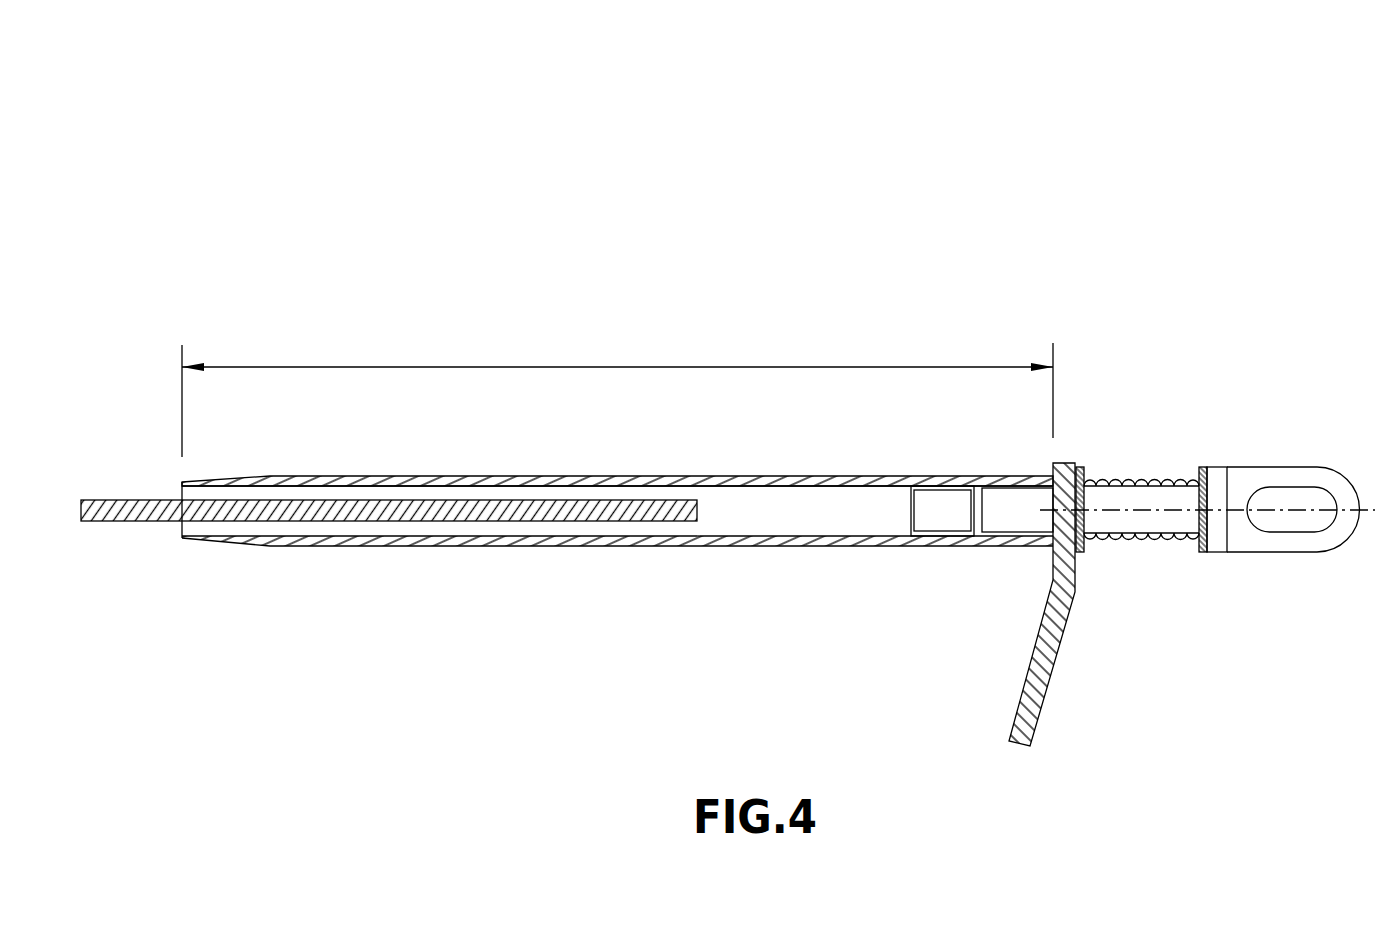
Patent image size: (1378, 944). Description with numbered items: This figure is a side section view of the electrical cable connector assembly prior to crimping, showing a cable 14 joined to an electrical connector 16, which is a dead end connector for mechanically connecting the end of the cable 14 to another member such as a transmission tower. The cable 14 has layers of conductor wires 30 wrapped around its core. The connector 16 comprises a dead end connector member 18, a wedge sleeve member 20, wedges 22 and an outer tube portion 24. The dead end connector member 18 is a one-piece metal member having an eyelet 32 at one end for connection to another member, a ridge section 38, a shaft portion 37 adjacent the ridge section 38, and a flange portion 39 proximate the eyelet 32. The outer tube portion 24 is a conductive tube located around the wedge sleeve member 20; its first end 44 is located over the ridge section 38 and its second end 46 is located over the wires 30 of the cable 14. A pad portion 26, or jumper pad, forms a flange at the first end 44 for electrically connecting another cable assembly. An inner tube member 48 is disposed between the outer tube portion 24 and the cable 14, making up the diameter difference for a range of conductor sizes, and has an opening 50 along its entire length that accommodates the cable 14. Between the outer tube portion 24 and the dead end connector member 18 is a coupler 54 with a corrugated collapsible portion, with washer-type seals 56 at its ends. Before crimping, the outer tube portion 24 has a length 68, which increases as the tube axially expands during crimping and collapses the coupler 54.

The cable 14 is at (86, 522).
The electrical connector 16 is at (198, 180).
The dead end connector member 18 is at (1248, 535).
The wedge sleeve member 20 is at (850, 523).
The wedges 22 is at (868, 512).
The outer tube portion 24 is at (723, 540).
The pad portion 26 is at (1038, 738).
The conductor wires 30 is at (200, 538).
The eyelet 32 is at (1310, 488).
The shaft portion 37 is at (1160, 518).
The ridge section 38 is at (992, 540).
The flange portion 39 is at (1220, 492).
The first end 44 is at (1025, 540).
The second end 46 is at (320, 478).
The inner tube member 48 is at (442, 530).
The opening 50 is at (311, 527).
The coupler 54 is at (1140, 478).
The seals 56 is at (1080, 550).
The length 68 is at (617, 367).